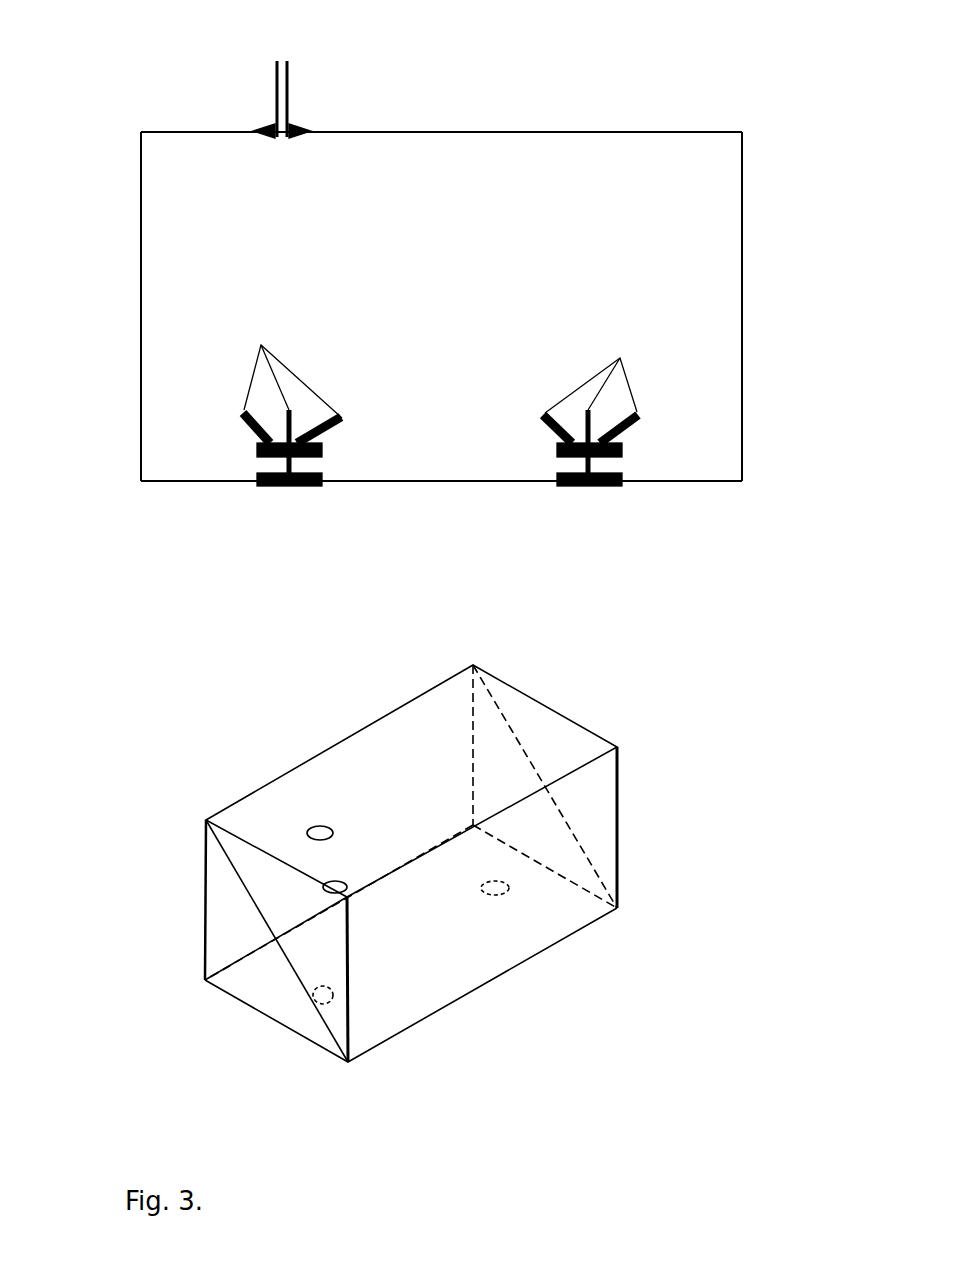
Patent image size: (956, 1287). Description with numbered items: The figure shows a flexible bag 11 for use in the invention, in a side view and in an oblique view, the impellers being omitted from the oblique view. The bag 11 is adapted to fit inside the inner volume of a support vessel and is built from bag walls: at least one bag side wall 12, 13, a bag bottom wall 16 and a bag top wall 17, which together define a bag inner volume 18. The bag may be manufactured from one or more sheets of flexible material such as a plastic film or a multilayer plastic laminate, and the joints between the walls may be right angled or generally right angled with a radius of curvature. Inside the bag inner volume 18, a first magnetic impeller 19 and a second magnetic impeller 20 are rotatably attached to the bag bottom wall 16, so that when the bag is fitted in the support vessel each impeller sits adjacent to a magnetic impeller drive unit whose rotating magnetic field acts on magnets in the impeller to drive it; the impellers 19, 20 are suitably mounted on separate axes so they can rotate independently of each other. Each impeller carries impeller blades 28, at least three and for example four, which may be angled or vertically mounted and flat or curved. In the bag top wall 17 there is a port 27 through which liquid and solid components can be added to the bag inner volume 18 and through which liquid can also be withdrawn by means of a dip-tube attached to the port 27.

The flexible bag 11 is at (411, 813).
The bag side wall 12 is at (141, 332).
The bag side wall 13 is at (742, 362).
The bag bottom wall 16 is at (440, 481).
The bag top wall 17 is at (511, 131).
The bag inner volume 18 is at (441, 306).
The first magnetic impeller 19 is at (256, 451).
The second magnetic impeller 20 is at (622, 450).
The port 27 is at (276, 124).
The impeller blades 28 is at (440, 363).